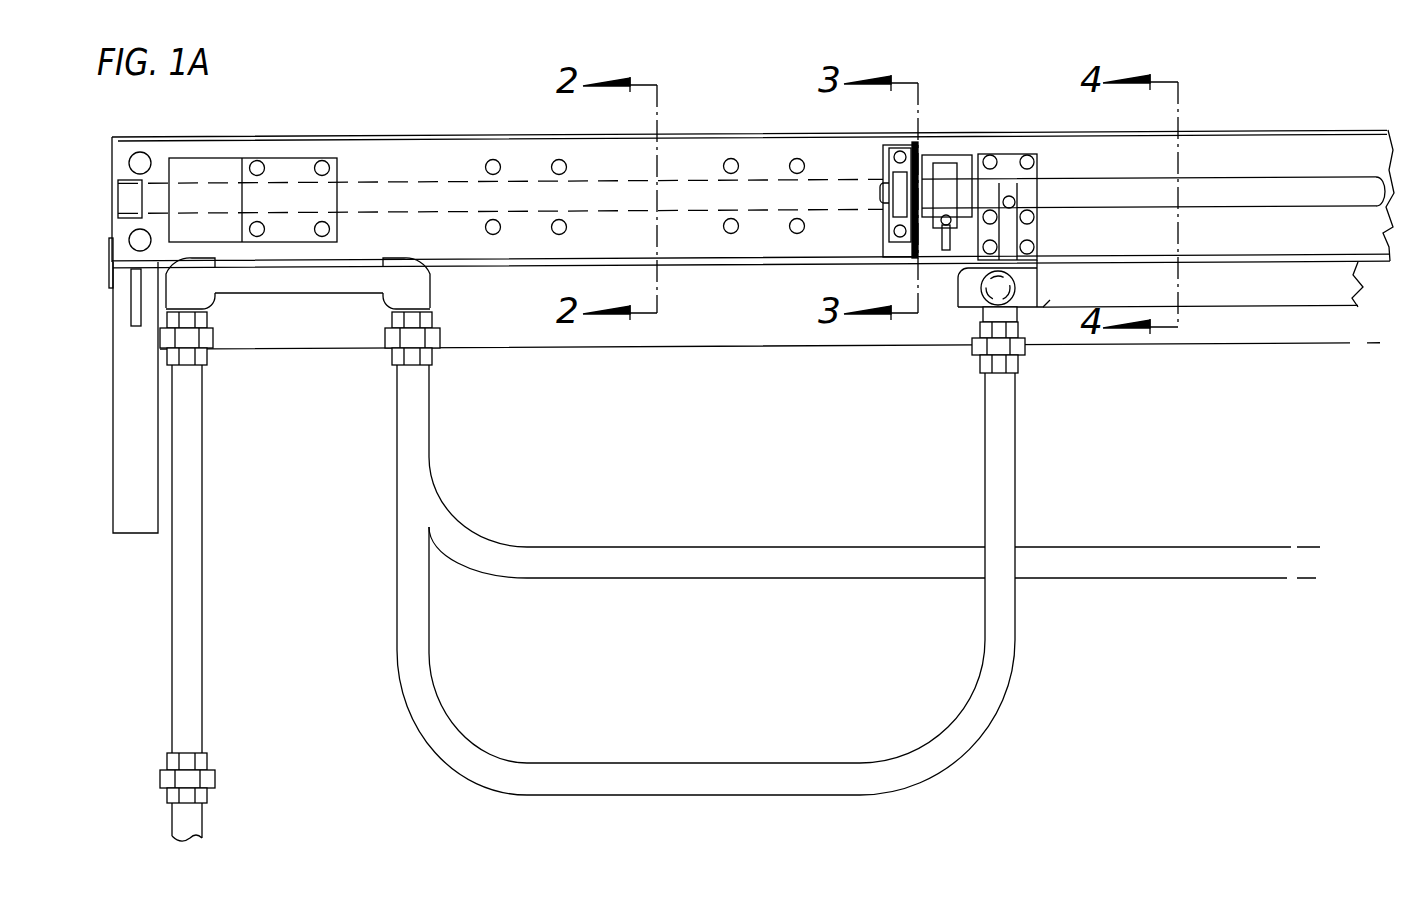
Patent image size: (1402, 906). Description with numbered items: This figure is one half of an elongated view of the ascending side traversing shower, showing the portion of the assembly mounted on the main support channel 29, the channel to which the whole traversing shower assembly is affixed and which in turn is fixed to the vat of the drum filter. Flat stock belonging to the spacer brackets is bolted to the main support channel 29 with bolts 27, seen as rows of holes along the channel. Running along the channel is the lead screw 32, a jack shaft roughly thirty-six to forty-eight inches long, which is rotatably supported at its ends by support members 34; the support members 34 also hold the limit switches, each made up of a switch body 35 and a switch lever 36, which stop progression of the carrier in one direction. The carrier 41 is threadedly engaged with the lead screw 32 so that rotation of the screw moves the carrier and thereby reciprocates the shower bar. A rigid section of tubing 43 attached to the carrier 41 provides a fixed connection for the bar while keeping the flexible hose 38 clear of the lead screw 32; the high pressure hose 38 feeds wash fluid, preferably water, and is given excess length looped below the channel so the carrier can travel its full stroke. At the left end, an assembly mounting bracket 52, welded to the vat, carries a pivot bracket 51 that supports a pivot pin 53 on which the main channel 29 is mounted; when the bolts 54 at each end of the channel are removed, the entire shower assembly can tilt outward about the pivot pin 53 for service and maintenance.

The bolts 27 is at (259, 160).
The main support channel 29 is at (398, 147).
The lead screw 32 is at (1252, 183).
The support members 34 is at (898, 175).
The switch body 35 is at (963, 163).
The switch lever 36 is at (952, 236).
The flexible hose 38 is at (465, 753).
The carrier 41 is at (1017, 180).
The rigid section of tubing 43 is at (982, 297).
The pivot bracket 51 is at (109, 283).
The assembly mounting bracket 52 is at (138, 520).
The pivot pin 53 is at (109, 262).
The bolts 54 is at (145, 230).